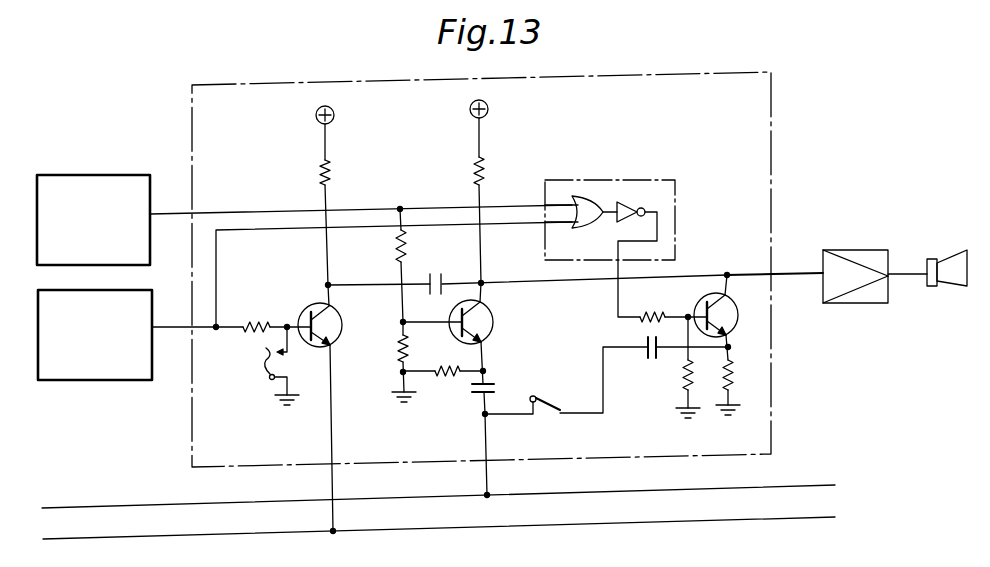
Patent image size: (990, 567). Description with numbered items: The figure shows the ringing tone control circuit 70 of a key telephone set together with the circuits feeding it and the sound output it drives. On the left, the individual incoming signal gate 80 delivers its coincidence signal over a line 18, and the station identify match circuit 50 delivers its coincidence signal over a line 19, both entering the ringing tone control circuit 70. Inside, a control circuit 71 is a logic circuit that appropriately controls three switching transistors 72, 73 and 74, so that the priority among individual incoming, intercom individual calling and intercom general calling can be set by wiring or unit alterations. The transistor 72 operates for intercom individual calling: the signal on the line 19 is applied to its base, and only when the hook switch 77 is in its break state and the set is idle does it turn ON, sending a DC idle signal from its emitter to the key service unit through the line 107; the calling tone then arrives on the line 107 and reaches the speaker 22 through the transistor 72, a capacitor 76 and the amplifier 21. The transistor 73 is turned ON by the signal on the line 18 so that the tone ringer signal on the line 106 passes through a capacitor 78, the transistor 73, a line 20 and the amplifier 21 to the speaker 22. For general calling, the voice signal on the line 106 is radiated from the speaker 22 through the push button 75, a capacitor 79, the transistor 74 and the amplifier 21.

The line 18 is at (165, 213).
The line 19 is at (167, 328).
The line 20 is at (792, 271).
The amplifier 21 is at (866, 249).
The speaker 22 is at (955, 250).
The station identify match circuit 50 is at (95, 290).
The ringing tone control circuit 70 is at (634, 66).
The control circuit 71 is at (676, 201).
The transistor 72 is at (338, 319).
The transistor 73 is at (490, 316).
The transistor 74 is at (733, 306).
The push button 75 is at (552, 395).
The capacitor 76 is at (436, 272).
The hook switch 77 is at (283, 368).
The capacitor 78 is at (496, 390).
The capacitor 79 is at (651, 362).
The individual incoming signal gate 80 is at (93, 174).
The line 106 is at (101, 492).
The line 107 is at (101, 534).